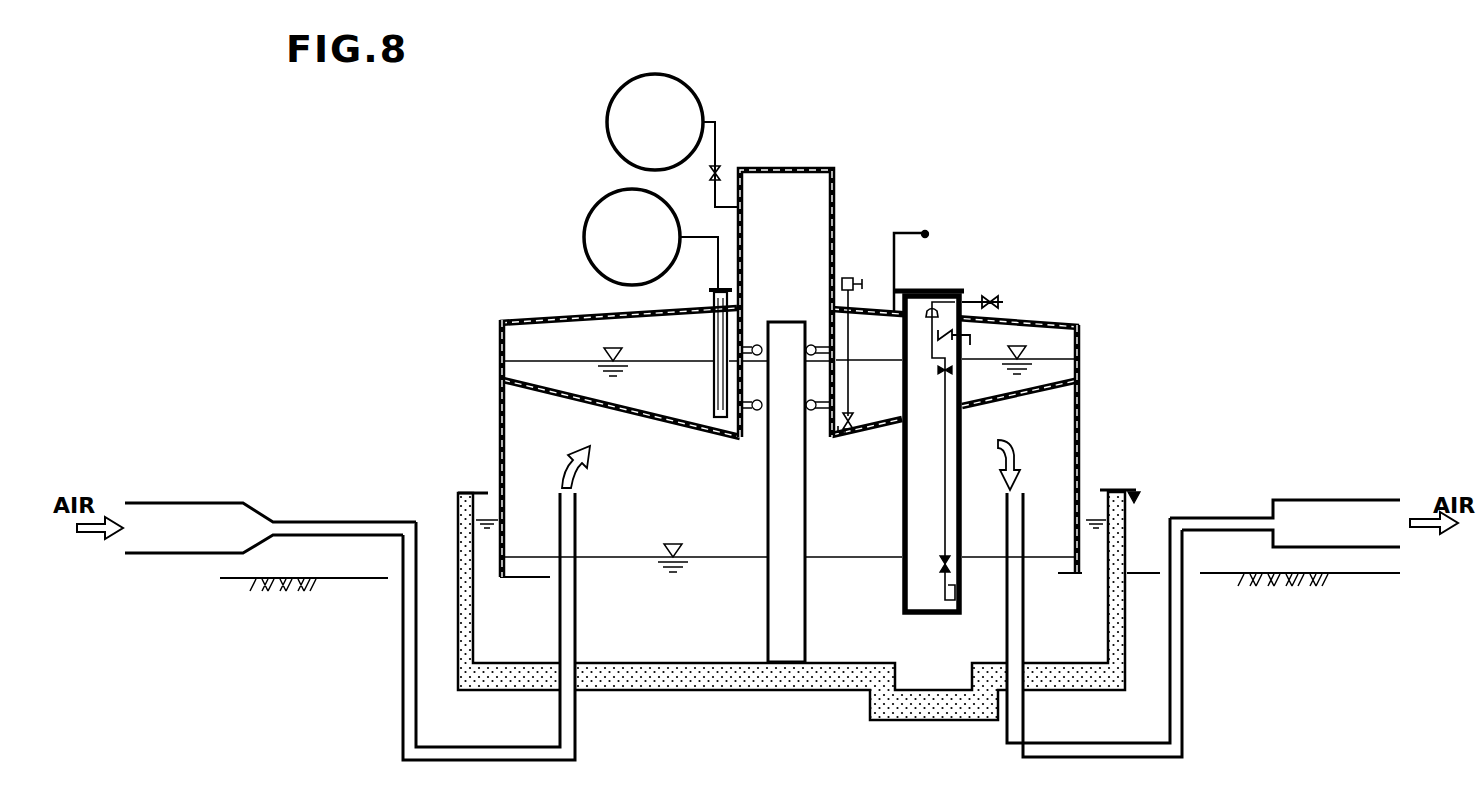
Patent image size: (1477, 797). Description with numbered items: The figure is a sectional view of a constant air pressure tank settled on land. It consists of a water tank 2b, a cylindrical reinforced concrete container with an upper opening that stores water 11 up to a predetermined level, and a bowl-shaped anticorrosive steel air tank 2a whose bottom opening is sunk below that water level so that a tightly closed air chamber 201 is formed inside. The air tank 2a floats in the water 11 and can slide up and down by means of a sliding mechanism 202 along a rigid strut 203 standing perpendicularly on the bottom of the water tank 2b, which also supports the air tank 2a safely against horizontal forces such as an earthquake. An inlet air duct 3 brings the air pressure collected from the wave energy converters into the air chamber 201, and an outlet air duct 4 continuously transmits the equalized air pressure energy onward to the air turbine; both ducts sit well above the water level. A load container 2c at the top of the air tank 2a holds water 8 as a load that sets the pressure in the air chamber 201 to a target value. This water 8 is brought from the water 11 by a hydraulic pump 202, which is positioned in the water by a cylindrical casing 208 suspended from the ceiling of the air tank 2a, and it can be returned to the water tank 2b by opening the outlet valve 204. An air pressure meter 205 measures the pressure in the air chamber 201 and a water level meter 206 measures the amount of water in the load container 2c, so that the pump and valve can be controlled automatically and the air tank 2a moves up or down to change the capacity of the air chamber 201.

The inlet air duct 3 is at (334, 520).
The outlet air duct 4 is at (1222, 518).
The air tank 2a is at (497, 430).
The water tank 2b is at (458, 522).
The load container 2c is at (552, 345).
The water 8 is at (1040, 360).
The water 11 is at (713, 545).
The air chamber 201 is at (1056, 441).
The sliding mechanism / hydraulic pump 202 is at (757, 340).
The rigid strut 203 is at (806, 540).
The outlet valve 204 is at (852, 430).
The air pressure meter 205 is at (607, 126).
The water level meter 206 is at (585, 226).
The cylindrical casing 208 is at (962, 432).